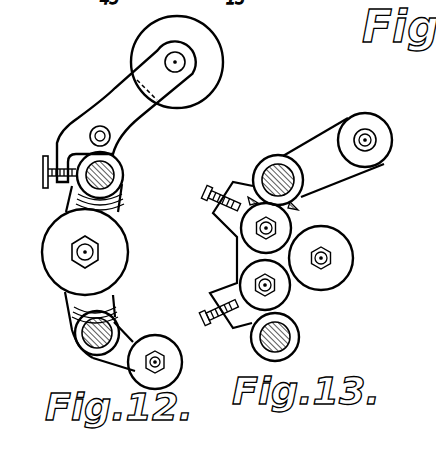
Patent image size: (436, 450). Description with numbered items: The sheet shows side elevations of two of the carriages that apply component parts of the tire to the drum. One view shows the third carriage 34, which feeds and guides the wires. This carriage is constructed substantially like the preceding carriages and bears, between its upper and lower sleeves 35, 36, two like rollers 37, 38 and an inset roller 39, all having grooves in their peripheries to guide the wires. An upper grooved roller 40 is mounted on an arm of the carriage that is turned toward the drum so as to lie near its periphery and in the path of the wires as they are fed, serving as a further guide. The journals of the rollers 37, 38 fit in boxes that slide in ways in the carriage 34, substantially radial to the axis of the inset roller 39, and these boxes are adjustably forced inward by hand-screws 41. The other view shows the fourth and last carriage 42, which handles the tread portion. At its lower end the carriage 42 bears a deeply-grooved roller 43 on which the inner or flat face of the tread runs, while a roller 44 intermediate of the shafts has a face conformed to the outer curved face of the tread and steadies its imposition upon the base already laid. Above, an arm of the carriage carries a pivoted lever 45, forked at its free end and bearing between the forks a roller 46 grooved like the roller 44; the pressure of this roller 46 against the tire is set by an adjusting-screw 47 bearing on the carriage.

In FIG. 13, the third carriage 34 is at (253, 255).
In FIG. 13, the upper sleeve 35 is at (255, 169).
In FIG. 13, the lower sleeve 36 is at (252, 342).
In FIG. 13, the grooved roller 37 is at (287, 223).
In FIG. 13, the grooved roller 38 is at (280, 295).
In FIG. 13, the inset roller 39 is at (354, 258).
In FIG. 13, the upper grooved roller 40 is at (393, 140).
In FIG. 13, the hand-screws 41 is at (207, 193).
In FIG. 12, the fourth carriage 42 is at (107, 184).
In FIG. 12, the deeply-grooved roller 43 is at (183, 362).
In FIG. 12, the roller 44 is at (130, 252).
In FIG. 12, the lever 45 is at (138, 123).
In FIG. 12, the roller 46 is at (224, 70).
In FIG. 12, the adjusting-screw 47 is at (42, 173).